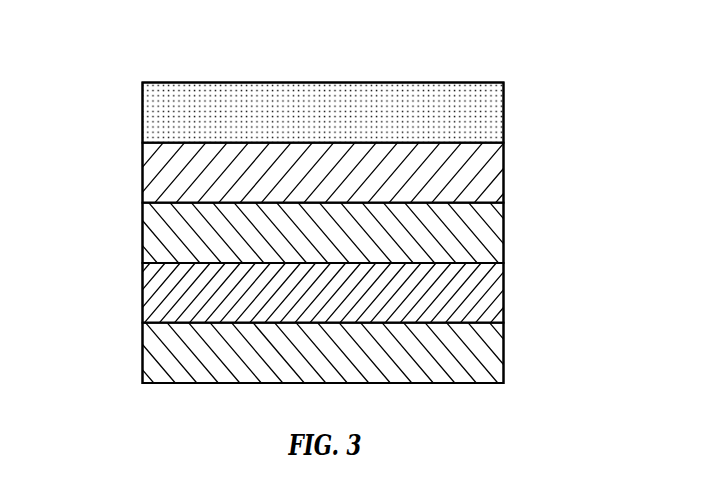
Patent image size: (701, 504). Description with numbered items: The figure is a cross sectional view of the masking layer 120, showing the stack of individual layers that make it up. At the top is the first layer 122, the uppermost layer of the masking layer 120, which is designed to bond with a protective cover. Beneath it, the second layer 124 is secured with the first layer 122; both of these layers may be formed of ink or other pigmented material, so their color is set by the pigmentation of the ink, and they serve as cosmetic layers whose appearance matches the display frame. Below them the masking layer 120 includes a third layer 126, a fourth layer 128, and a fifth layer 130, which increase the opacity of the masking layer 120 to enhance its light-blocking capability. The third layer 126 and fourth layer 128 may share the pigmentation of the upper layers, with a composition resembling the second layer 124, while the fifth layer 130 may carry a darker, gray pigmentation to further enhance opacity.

The masking layer 120 is at (72, 80).
The first layer 122 is at (504, 116).
The second layer 124 is at (504, 174).
The third layer 126 is at (504, 232).
The fourth layer 128 is at (504, 290).
The fifth layer 130 is at (504, 359).